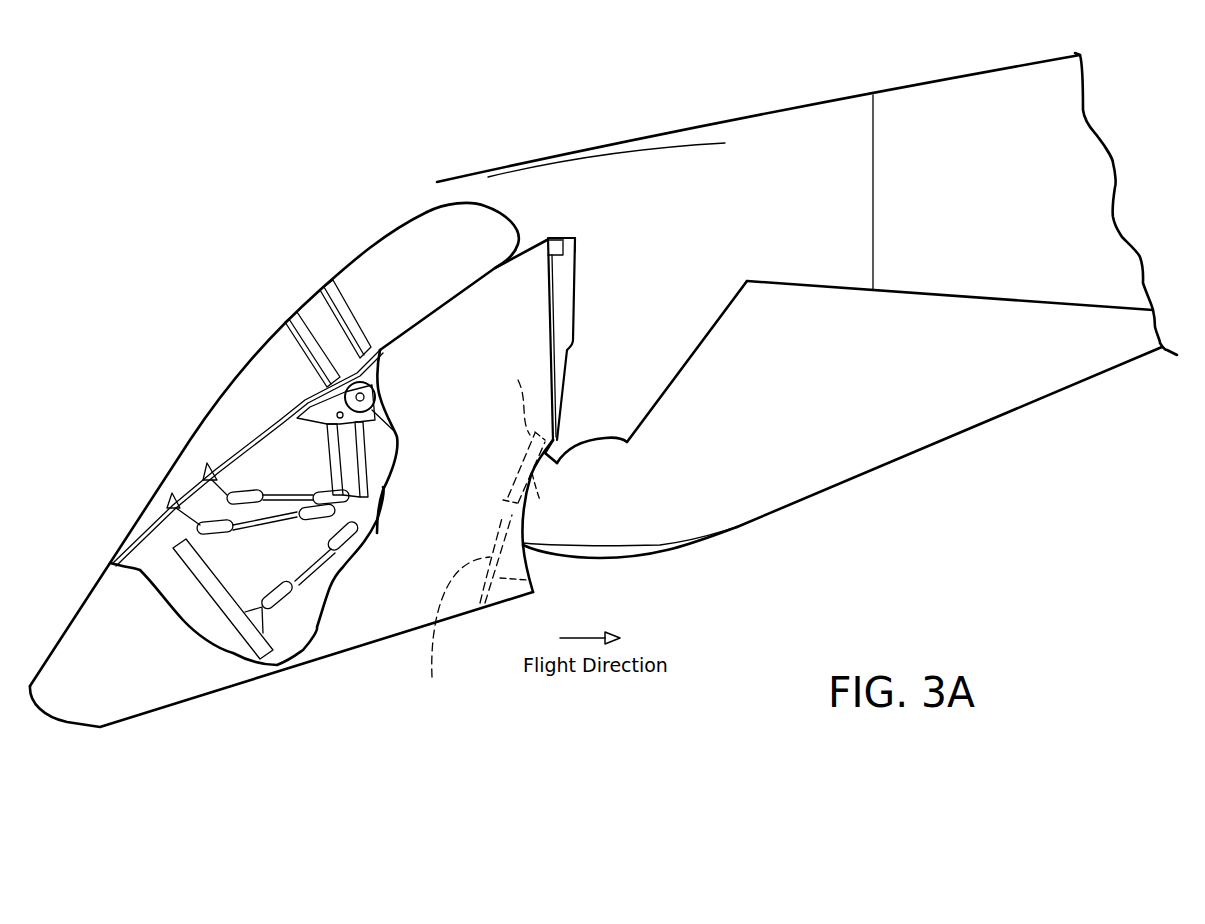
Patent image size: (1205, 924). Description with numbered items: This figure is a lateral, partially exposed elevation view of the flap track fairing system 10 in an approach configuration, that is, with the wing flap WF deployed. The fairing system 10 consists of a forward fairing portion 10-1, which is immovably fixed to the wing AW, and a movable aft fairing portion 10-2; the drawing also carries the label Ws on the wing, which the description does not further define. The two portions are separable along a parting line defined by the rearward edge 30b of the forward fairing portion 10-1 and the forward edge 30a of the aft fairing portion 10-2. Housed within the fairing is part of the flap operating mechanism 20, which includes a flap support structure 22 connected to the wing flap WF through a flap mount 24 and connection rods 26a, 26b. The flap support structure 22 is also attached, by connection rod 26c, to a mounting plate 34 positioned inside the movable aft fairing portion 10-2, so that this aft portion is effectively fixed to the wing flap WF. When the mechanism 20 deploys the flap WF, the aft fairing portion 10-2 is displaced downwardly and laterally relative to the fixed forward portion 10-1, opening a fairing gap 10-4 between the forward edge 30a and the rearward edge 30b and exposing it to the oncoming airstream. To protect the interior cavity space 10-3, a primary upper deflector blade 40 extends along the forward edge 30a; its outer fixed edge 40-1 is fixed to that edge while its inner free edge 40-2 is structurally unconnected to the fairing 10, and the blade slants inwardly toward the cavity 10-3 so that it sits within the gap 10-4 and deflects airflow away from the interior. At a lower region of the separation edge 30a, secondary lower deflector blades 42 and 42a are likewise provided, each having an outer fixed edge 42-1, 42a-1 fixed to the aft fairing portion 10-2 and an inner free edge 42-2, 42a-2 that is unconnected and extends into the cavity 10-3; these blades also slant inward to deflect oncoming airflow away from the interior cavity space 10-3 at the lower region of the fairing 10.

The fairing system 10 is at (268, 710).
The forward fairing portion 10-1 is at (839, 399).
The movable aft fairing portion 10-2 is at (486, 443).
The interior cavity space 10-3 is at (289, 565).
The fairing gap 10-4 is at (704, 278).
The flap operating mechanism 20 is at (290, 440).
The flap support structure 22 is at (390, 438).
The flap mount 24 is at (330, 397).
The connection rod 26a is at (245, 490).
The connection rod 26b is at (233, 520).
The connection rod 26c is at (320, 567).
The forward edge of the aft fairing portion 30a is at (577, 347).
The rearward edge of the forward fairing portion 30b is at (697, 355).
The mounting plate 34 is at (217, 592).
The primary (upper) deflector blade 40 is at (567, 272).
The outer fixed edge 40-1 is at (558, 237).
The inner free edge 40-2 is at (578, 253).
The secondary (lower) deflector blade 42 is at (461, 634).
The outer fixed edge 42-1 is at (493, 533).
The inner free edge 42-2 is at (537, 587).
The secondary deflector blade 42a is at (517, 480).
The outer fixed edge 42a-1 is at (512, 394).
The inner free edge 42a-2 is at (540, 500).
The wing surface Ws is at (978, 112).
The wing AW is at (941, 222).
The wing flap WF is at (406, 288).